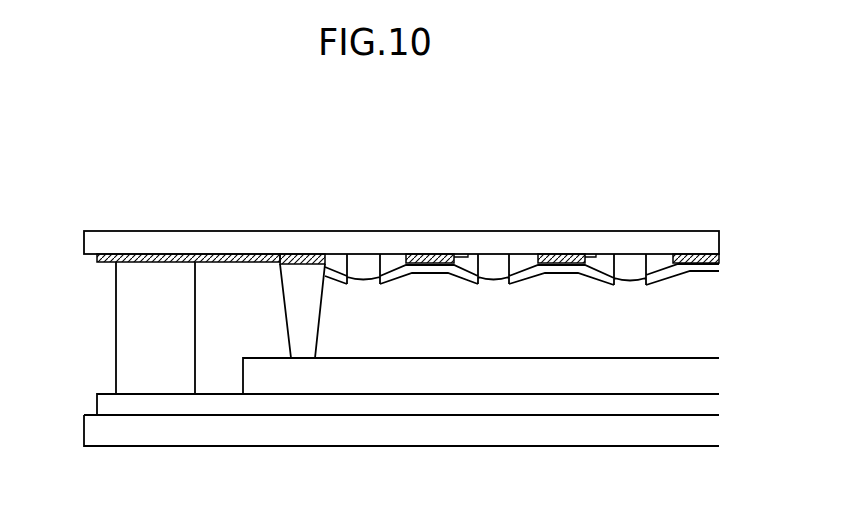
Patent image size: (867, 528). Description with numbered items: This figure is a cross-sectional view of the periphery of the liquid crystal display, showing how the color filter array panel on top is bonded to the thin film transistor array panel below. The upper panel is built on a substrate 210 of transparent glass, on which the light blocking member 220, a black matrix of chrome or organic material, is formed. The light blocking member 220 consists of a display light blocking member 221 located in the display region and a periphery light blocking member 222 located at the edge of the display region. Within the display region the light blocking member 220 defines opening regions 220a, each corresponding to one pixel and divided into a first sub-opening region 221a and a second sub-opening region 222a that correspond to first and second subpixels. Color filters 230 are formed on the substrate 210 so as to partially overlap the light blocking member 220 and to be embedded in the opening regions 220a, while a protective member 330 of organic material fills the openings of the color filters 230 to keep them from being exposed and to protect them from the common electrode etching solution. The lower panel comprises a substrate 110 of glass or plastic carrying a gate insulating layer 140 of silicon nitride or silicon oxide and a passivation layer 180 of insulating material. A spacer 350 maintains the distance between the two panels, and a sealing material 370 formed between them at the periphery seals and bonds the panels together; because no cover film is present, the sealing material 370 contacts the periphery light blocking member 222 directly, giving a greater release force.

The substrate 110 is at (193, 432).
The gate insulating layer 140 is at (427, 403).
The passivation layer 180 is at (542, 380).
The substrate 210 is at (173, 238).
The light blocking member 220 is at (323, 164).
The display light blocking member 221 is at (297, 253).
The periphery light blocking member 222 is at (230, 253).
The opening region 220a is at (633, 164).
The first sub-opening region 221a is at (597, 255).
The second sub-opening region 222a is at (465, 255).
The color filter 230 is at (660, 263).
The protective member 330 is at (364, 264).
The spacer 350 is at (302, 335).
The sealing material 370 is at (138, 322).